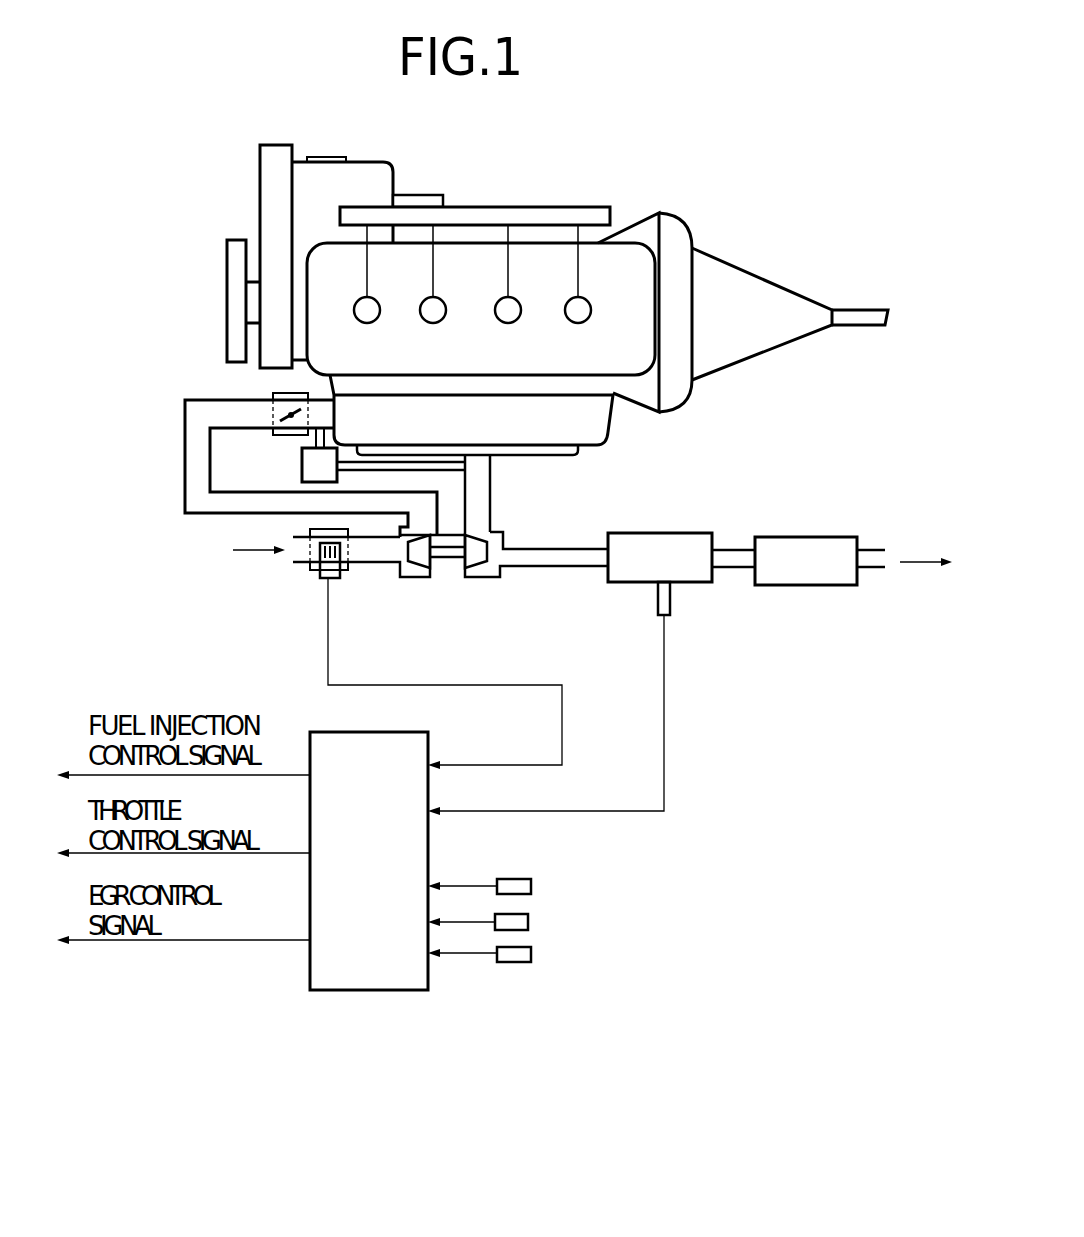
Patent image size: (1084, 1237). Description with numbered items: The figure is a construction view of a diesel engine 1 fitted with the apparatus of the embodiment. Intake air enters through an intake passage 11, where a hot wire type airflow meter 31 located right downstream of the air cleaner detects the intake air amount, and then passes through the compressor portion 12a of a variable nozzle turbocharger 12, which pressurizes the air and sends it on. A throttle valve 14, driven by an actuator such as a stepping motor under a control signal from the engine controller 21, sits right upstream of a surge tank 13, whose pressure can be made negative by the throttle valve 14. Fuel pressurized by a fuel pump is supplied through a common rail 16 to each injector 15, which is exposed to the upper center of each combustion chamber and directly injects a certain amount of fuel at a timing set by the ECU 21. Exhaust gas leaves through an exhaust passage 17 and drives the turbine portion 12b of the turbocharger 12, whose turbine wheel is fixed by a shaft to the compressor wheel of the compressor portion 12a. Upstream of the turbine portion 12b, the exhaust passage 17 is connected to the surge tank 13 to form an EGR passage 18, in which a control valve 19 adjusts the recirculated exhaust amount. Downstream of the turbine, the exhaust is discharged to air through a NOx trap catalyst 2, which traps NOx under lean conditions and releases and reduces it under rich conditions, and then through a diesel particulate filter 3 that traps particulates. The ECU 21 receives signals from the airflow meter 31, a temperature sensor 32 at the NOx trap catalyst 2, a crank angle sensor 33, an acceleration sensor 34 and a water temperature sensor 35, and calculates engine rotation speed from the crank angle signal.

The diesel engine 1 is at (599, 170).
The NOx trap catalyst 2 is at (675, 532).
The diesel particulate filter 3 is at (827, 537).
The intake passage 11 is at (183, 447).
The variable nozzle turbocharger 12 is at (450, 600).
The compressor portion 12a is at (412, 577).
The turbine portion 12b is at (483, 577).
The surge tank 13 is at (605, 447).
The throttle valve 14 is at (283, 393).
The injector 15 is at (376, 319).
The common rail 16 is at (541, 207).
The exhaust passage 17 is at (490, 483).
The EGR passage 18 is at (443, 472).
The control valve 19 is at (302, 463).
The engine controller 21 is at (375, 992).
The airflow meter 31 is at (313, 572).
The temperature sensor 32 is at (672, 600).
The crank angle sensor 33 is at (531, 886).
The acceleration sensor 34 is at (528, 922).
The water temperature sensor 35 is at (531, 953).